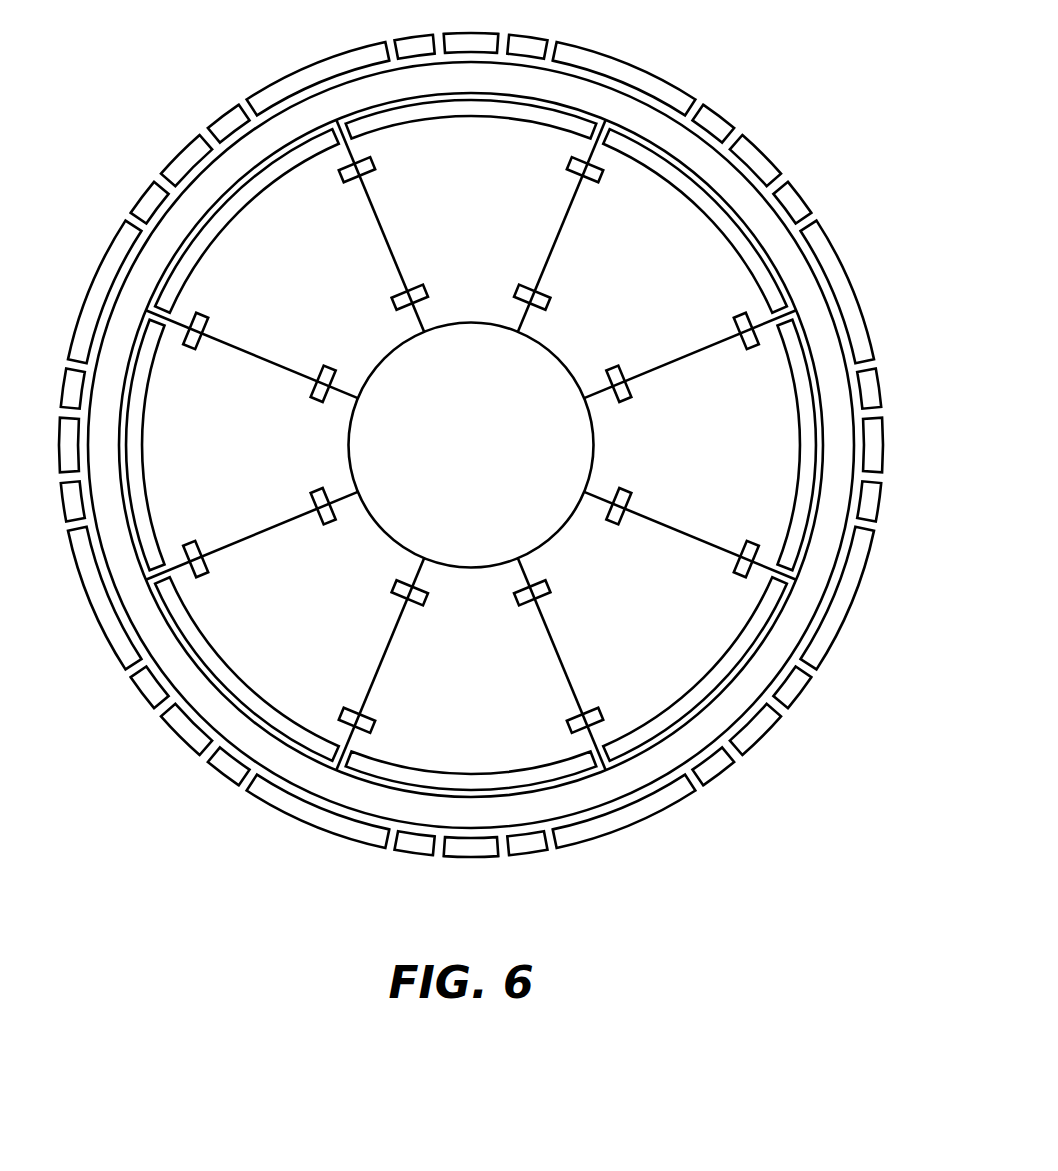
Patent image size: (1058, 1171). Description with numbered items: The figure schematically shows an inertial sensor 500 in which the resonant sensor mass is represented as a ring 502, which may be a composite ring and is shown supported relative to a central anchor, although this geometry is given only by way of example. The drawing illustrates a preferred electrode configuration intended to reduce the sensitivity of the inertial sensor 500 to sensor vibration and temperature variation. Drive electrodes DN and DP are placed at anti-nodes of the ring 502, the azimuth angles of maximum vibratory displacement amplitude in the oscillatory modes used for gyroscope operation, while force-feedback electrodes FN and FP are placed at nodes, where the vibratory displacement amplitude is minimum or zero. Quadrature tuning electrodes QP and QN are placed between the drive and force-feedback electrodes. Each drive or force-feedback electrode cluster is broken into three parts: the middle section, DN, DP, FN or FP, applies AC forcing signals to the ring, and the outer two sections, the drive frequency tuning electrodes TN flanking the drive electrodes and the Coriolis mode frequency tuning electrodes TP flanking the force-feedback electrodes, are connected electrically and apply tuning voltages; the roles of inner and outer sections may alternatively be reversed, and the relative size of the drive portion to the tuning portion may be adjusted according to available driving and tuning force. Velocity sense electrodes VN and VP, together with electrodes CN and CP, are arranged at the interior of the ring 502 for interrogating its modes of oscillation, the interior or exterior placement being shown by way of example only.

The inertial sensor 500 is at (477, 447).
The ring 502 is at (785, 260).
The drive frequency tuning electrode TN is at (469, 446).
The Coriolis mode frequency tuning electrode TP is at (472, 446).
The drive electrode DN is at (471, 447).
The drive electrode DP is at (468, 445).
The force-feedback electrode FN is at (472, 443).
The force-feedback electrode FP is at (474, 445).
The quadrature tuning electrode QN is at (473, 445).
The quadrature tuning electrode QP is at (470, 446).
The velocity sense electrode VN is at (471, 445).
The velocity sense electrode VP is at (471, 445).
The sense electrode CN is at (470, 444).
The sense electrode CP is at (470, 444).